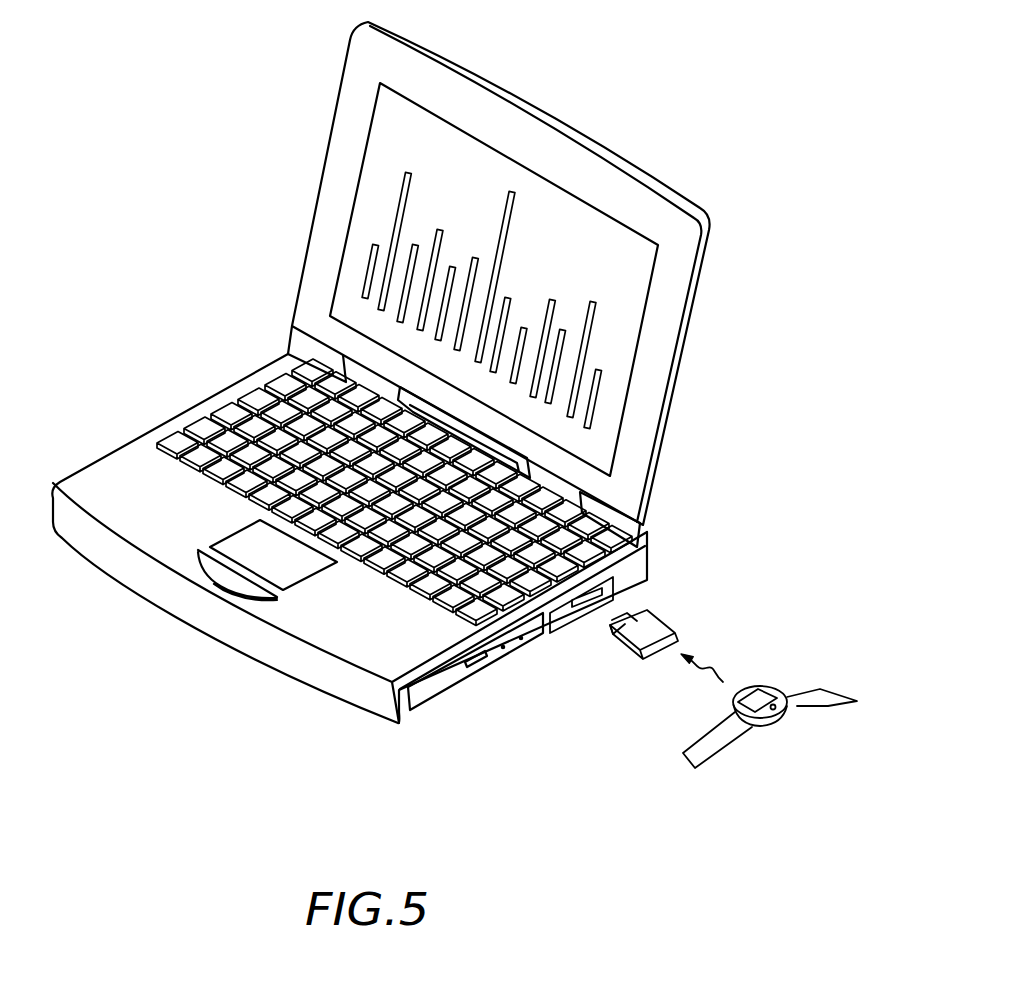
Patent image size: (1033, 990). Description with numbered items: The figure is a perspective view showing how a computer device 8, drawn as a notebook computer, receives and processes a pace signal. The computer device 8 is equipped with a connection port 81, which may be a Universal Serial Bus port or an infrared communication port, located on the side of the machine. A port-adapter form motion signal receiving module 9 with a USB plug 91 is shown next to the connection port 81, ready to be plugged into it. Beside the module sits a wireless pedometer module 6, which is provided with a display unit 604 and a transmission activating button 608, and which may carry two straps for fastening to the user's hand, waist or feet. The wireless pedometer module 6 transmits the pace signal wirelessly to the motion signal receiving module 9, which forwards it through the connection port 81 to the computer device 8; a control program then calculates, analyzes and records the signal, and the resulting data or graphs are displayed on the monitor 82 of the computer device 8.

The computer device 8 is at (113, 467).
The monitor 82 is at (375, 200).
The connection port 81 is at (612, 607).
The motion signal receiving module 9 is at (668, 622).
The USB plug 91 is at (610, 627).
The wireless pedometer module 6 is at (772, 723).
The display unit 604 is at (758, 697).
The transmission activating button 608 is at (775, 707).